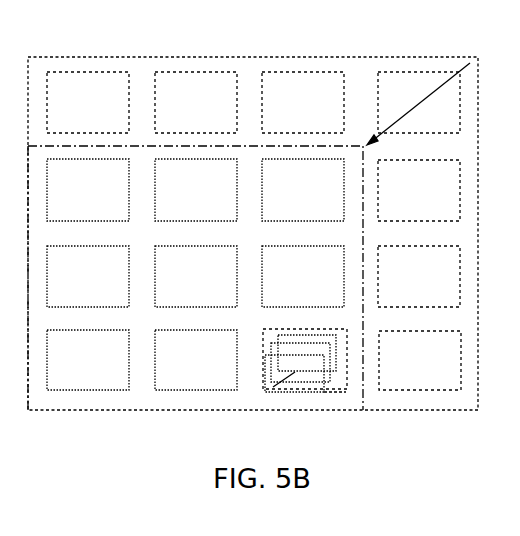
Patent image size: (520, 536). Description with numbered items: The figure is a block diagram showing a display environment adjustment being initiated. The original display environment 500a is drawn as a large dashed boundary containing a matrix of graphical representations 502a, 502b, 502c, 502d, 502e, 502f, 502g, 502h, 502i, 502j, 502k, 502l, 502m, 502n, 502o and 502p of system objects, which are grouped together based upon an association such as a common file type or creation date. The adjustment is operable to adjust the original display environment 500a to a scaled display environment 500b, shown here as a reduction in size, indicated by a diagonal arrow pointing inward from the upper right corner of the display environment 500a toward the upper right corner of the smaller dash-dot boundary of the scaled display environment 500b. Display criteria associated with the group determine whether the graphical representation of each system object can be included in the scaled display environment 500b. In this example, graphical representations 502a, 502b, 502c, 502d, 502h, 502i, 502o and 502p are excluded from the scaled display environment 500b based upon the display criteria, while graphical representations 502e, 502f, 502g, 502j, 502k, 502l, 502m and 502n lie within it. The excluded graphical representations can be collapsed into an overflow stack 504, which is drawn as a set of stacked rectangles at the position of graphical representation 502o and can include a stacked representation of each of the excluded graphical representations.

The display environment 500a is at (168, 57).
The scaled display environment 500b is at (365, 388).
The graphical representation 502a is at (88, 102).
The graphical representation 502b is at (196, 102).
The graphical representation 502c is at (303, 102).
The graphical representation 502d is at (419, 102).
The graphical representation 502e is at (88, 190).
The graphical representation 502f is at (196, 190).
The graphical representation 502g is at (303, 190).
The graphical representation 502h is at (419, 190).
The graphical representation 502i is at (88, 276).
The graphical representation 502j is at (196, 276).
The graphical representation 502k is at (303, 276).
The graphical representation 502l is at (419, 276).
The graphical representation 502m is at (88, 360).
The graphical representation 502n is at (196, 360).
The graphical representation 502o is at (347, 388).
The graphical representation 502p is at (420, 360).
The overflow stack 504 is at (266, 392).